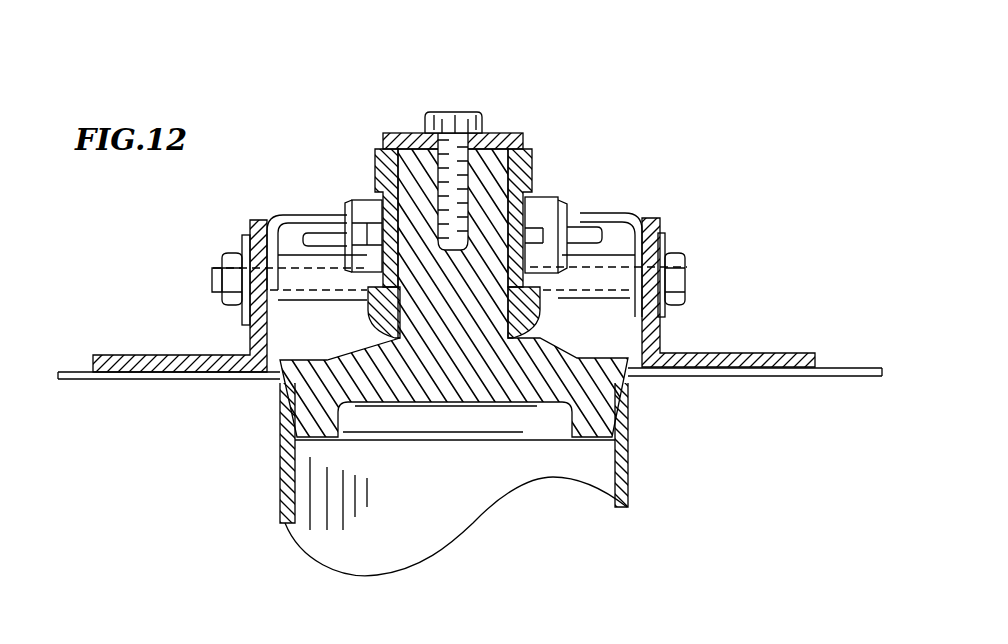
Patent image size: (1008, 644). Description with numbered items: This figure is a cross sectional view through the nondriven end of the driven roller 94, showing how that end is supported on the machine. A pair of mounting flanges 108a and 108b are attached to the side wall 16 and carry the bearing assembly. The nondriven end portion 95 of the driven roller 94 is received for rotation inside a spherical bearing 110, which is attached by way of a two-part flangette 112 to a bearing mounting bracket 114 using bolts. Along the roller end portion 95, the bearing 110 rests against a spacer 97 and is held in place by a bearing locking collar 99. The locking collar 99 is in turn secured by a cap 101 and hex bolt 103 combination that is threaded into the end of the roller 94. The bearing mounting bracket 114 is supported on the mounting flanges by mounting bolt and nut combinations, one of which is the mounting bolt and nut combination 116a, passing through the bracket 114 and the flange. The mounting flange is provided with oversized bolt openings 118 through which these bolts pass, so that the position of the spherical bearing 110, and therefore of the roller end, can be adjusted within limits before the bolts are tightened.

The side wall 16 is at (832, 378).
The driven roller 94 is at (628, 448).
The nondriven end portion 95 is at (525, 146).
The spacer 97 is at (368, 308).
The bearing locking collar 99 is at (380, 160).
The cap 101 is at (500, 134).
The hex bolt 103 is at (448, 112).
The mounting flange 108a is at (190, 355).
The mounting flange 108b is at (730, 354).
The spherical bearing 110 is at (540, 213).
The two-part flangette 112 is at (325, 214).
The bearing mounting bracket 114 is at (600, 224).
The mounting bolt and nut combination 116a is at (682, 258).
The oversized bolt openings 118 is at (655, 218).